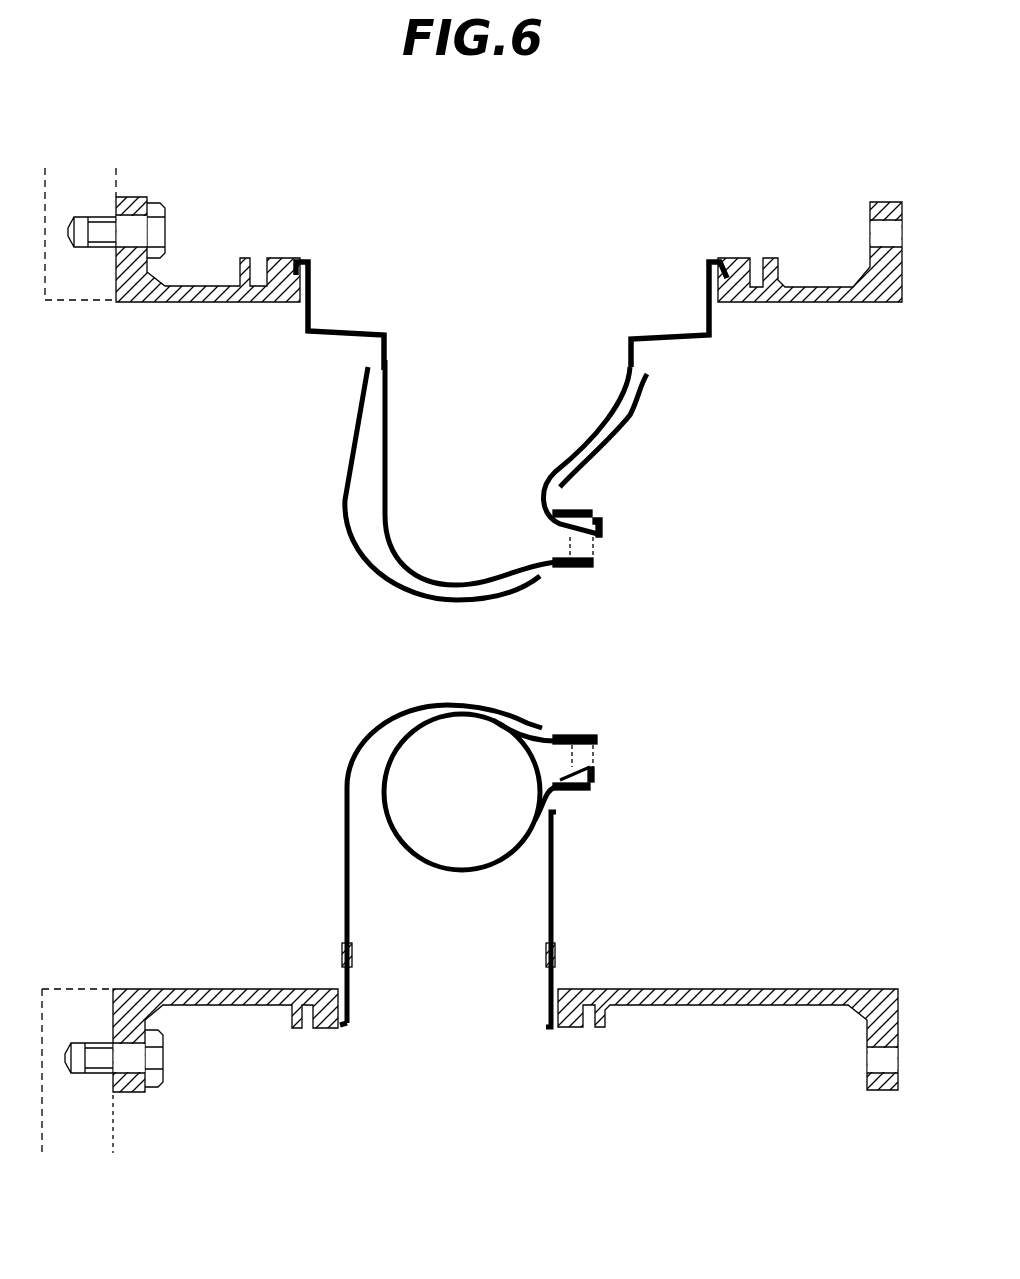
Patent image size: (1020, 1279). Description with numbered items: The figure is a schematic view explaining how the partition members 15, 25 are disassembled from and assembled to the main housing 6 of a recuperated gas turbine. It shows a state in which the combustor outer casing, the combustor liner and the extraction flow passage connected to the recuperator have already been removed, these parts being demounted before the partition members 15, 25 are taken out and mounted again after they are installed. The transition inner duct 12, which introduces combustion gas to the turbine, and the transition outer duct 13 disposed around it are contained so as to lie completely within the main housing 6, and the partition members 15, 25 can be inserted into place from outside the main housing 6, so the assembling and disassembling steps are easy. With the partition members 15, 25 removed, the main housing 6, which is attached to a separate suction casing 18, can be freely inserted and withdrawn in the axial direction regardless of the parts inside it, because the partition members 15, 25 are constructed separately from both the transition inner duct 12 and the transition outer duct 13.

The main housing 6 is at (200, 304).
The transition inner duct 12 is at (397, 543).
The transition outer duct 13 is at (366, 564).
The partition member 15 is at (350, 330).
The suction casing 18 is at (80, 305).
The partition member 25 is at (353, 985).